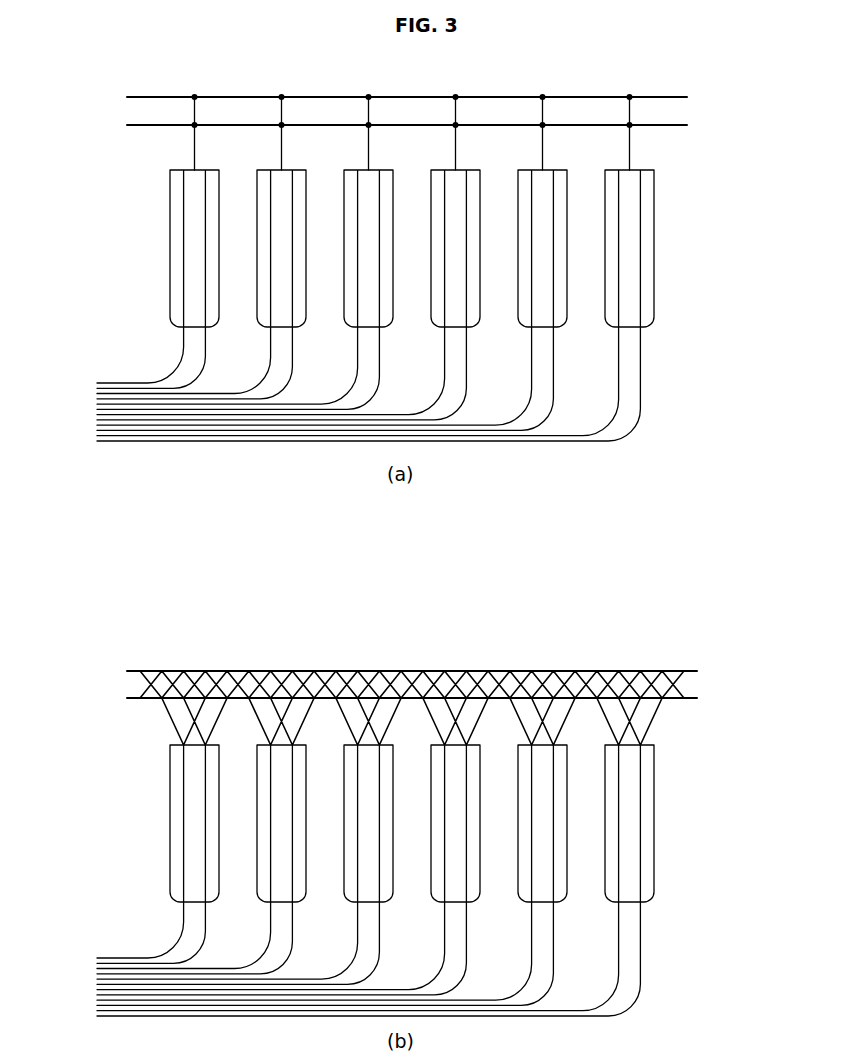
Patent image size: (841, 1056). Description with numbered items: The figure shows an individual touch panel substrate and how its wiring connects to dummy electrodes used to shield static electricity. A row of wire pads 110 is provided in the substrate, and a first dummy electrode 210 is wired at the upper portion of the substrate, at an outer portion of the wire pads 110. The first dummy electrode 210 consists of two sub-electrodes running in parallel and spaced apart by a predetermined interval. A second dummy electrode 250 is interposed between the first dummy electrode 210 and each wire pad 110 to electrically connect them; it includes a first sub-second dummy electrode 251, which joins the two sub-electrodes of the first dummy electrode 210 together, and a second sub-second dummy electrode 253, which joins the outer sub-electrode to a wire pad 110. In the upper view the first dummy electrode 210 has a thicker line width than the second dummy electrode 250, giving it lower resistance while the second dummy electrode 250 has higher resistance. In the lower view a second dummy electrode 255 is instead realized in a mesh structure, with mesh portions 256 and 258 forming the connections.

The wire pad 110 is at (654, 243).
The first dummy electrode 210 is at (468, 111).
The second dummy electrode 250 is at (331, 132).
The first sub-second dummy electrode 251 is at (194, 142).
The second sub-second dummy electrode 253 is at (194, 107).
The second dummy electrode 255 is at (353, 708).
The first connection mesh 256 is at (172, 720).
The second connection mesh 258 is at (150, 681).